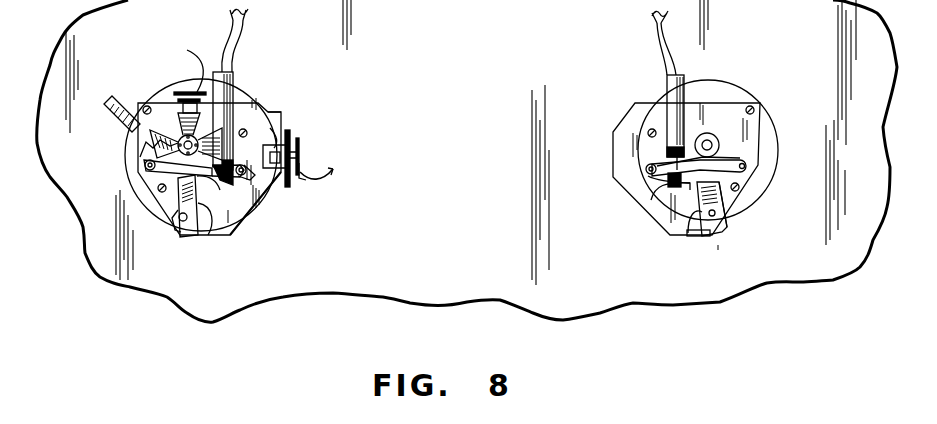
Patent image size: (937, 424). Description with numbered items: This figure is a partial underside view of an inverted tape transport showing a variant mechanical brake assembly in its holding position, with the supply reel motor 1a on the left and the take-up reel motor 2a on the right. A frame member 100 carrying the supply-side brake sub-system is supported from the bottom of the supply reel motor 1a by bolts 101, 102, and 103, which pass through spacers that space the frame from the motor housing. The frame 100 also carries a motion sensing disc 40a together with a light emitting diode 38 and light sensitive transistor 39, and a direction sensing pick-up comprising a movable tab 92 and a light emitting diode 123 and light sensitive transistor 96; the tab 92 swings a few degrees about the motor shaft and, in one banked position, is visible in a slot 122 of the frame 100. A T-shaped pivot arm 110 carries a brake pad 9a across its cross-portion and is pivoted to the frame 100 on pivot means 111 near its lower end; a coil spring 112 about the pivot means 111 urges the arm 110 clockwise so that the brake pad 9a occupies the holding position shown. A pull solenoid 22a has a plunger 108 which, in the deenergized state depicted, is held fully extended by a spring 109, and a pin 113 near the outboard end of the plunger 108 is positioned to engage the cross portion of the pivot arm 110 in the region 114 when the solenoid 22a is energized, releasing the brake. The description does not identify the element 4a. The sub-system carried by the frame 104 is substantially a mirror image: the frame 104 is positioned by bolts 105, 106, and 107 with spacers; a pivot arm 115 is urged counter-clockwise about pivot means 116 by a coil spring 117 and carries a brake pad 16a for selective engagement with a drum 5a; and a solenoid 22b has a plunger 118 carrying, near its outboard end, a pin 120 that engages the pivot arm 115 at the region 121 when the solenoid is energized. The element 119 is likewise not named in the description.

The supply reel motor 1a is at (145, 97).
The bolt 101 is at (140, 101).
The bolt 102 is at (245, 127).
The bolt 103 is at (160, 192).
The movable tab 92 is at (118, 130).
The motion sensing disc 40a is at (140, 157).
The light emitting diode 38 is at (184, 92).
The light sensitive transistor 39 is at (195, 92).
The pull solenoid 22a is at (233, 82).
The frame member 100 is at (283, 112).
The slot 122 is at (274, 140).
The brake pad 9a is at (155, 166).
The lever arm 4a is at (207, 168).
The plunger 108 is at (252, 196).
The region 114 is at (217, 187).
The T-shaped pivot arm 110 is at (172, 220).
The pivot means 111 is at (187, 233).
The coil spring 112 is at (207, 228).
The pin 113 is at (237, 218).
The spring 109 is at (272, 182).
The light emitting diode 123 is at (305, 152).
The light sensitive transistor 96 is at (302, 160).
The take-up reel motor 2a is at (739, 82).
The frame 104 is at (628, 114).
The bolt 105 is at (648, 133).
The bolt 106 is at (754, 110).
The bolt 107 is at (740, 188).
The solenoid 22b is at (665, 90).
The drum 5a is at (720, 140).
The brake pad 16a is at (745, 160).
The plunger 118 is at (648, 168).
The spring 119 is at (650, 175).
The pin 120 is at (658, 198).
The region 121 is at (680, 187).
The pivot arm 115 is at (734, 200).
The pivot means 116 is at (729, 226).
The coil spring 117 is at (698, 234).